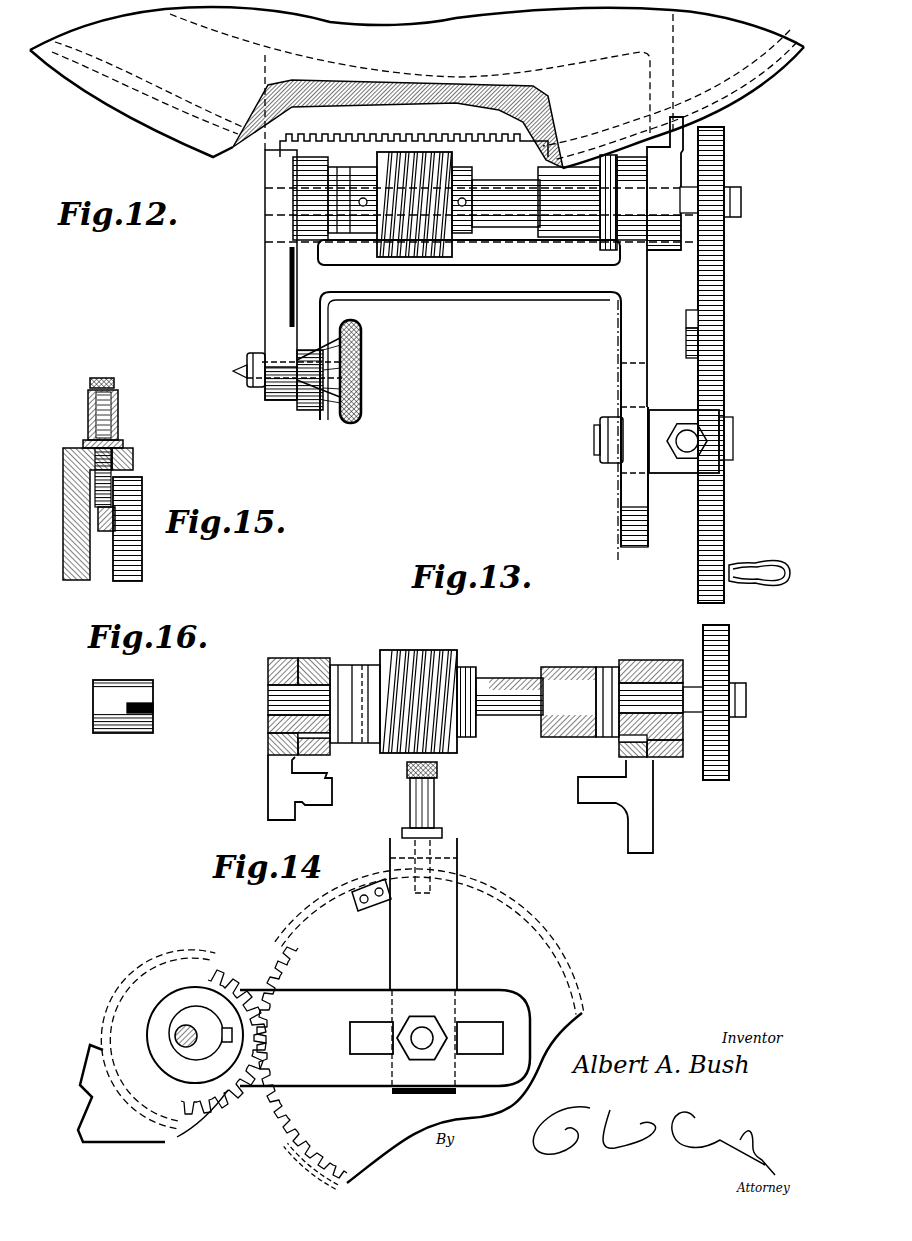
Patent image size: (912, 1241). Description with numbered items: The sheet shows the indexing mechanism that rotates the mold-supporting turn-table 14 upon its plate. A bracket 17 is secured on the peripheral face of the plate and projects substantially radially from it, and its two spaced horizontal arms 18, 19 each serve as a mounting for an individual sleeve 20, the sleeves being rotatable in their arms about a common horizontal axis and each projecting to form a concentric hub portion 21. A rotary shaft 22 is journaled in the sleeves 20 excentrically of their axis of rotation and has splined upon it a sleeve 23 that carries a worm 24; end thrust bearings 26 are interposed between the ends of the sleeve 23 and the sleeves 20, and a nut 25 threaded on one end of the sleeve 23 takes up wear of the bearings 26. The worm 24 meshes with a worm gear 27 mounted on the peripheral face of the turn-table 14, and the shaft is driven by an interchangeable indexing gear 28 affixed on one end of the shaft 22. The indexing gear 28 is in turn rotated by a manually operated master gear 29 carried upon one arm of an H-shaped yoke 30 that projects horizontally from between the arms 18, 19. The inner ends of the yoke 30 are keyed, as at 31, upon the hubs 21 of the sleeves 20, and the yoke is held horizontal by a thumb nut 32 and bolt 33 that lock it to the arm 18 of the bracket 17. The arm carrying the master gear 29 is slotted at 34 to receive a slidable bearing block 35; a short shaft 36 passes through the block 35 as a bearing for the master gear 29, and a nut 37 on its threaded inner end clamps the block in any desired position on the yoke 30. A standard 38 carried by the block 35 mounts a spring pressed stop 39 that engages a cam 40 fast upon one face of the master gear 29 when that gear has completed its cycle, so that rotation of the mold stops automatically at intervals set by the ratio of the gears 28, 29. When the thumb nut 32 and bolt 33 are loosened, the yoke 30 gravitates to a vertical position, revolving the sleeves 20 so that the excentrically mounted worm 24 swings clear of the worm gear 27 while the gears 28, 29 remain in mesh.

In FIG. 12, the turn-table 14 is at (180, 133).
In FIG. 12, the bracket 17 is at (268, 162).
In FIG. 12, the arm 18 is at (265, 276).
In FIG. 12, the arm 19 is at (686, 122).
In FIG. 13, the arm 19 is at (662, 668).
In FIG. 14, the arm 19 is at (145, 1142).
In FIG. 16, the sleeve 20 is at (93, 707).
In FIG. 13, the sleeve 20 is at (267, 723).
In FIG. 14, the sleeve 20 is at (195, 1038).
In FIG. 16, the hub portion 21 is at (149, 686).
In FIG. 13, the rotary shaft 22 is at (267, 698).
In FIG. 14, the rotary shaft 22 is at (175, 1033).
In FIG. 12, the sleeve 23 is at (505, 174).
In FIG. 13, the sleeve 23 is at (520, 682).
In FIG. 12, the worm 24 is at (452, 250).
In FIG. 13, the worm 24 is at (445, 652).
In FIG. 12, the nut 25 is at (548, 238).
In FIG. 13, the nut 25 is at (565, 668).
In FIG. 12, the end thrust bearings 26 is at (315, 247).
In FIG. 13, the end thrust bearings 26 is at (365, 668).
In FIG. 12, the worm gear 27 is at (540, 130).
In FIG. 12, the indexing gear 28 is at (726, 250).
In FIG. 13, the indexing gear 28 is at (729, 748).
In FIG. 12, the master gear 29 is at (728, 537).
In FIG. 15, the master gear 29 is at (143, 566).
In FIG. 14, the master gear 29 is at (232, 1039).
In FIG. 12, the H-shaped yoke 30 is at (483, 393).
In FIG. 13, the H-shaped yoke 30 is at (653, 821).
In FIG. 14, the H-shaped yoke 30 is at (364, 1085).
In FIG. 13, the key 31 is at (330, 752).
In FIG. 14, the key 31 is at (232, 1041).
In FIG. 12, the thumb nut 32 is at (362, 372).
In FIG. 12, the bolt 33 is at (245, 372).
In FIG. 14, the slot 34 is at (490, 1016).
In FIG. 14, the bearing block 35 is at (388, 1030).
In FIG. 14, the short shaft 36 is at (446, 1050).
In FIG. 12, the nut 37 is at (606, 465).
In FIG. 14, the nut 37 is at (440, 1022).
In FIG. 15, the standard 38 is at (70, 577).
In FIG. 14, the standard 38 is at (458, 974).
In FIG. 12, the spring pressed stop 39 is at (732, 440).
In FIG. 15, the spring pressed stop 39 is at (88, 410).
In FIG. 14, the spring pressed stop 39 is at (437, 792).
In FIG. 12, the cam 40 is at (688, 352).
In FIG. 15, the cam 40 is at (118, 535).
In FIG. 14, the cam 40 is at (364, 910).